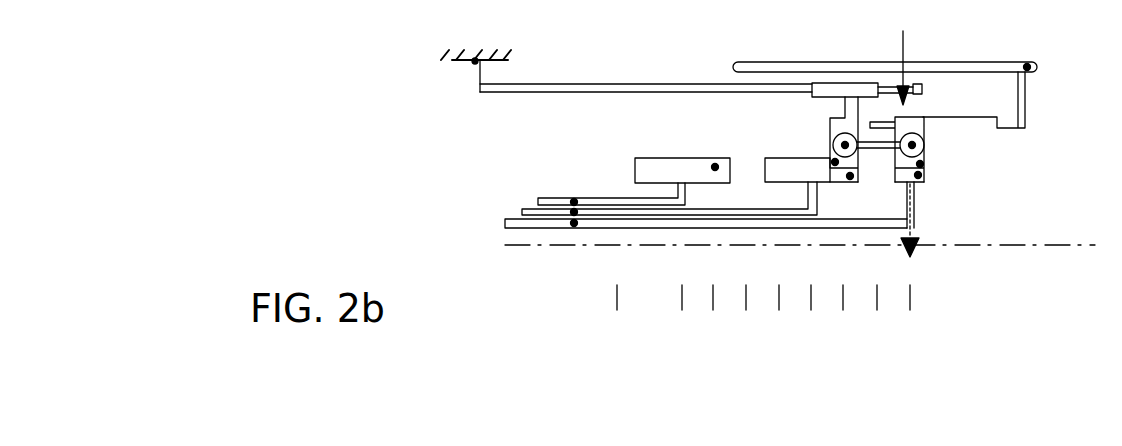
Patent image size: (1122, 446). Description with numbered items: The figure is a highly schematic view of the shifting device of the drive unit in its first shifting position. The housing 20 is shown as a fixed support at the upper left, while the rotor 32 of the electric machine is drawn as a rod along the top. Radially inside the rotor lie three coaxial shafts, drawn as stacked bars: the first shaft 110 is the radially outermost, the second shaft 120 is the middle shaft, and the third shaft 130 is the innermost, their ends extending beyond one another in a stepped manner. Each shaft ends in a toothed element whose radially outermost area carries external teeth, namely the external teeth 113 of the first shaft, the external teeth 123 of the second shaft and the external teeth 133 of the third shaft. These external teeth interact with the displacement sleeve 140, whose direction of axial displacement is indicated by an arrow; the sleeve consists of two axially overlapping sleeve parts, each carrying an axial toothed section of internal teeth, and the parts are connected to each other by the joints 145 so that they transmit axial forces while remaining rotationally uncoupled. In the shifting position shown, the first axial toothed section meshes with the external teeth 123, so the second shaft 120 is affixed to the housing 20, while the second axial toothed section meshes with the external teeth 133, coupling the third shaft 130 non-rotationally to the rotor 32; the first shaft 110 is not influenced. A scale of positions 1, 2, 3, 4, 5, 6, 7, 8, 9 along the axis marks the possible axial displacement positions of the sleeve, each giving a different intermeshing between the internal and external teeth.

The housing 20 is at (473, 62).
The rotor 32 is at (1027, 67).
The first shaft 110 is at (574, 202).
The second shaft 120 is at (574, 212).
The third shaft 130 is at (574, 223).
The external teeth 113 is at (715, 167).
The external teeth 123 is at (850, 176).
The external teeth 133 is at (918, 175).
The displacement sleeve 140 is at (902, 54).
The pivot joints 145 is at (845, 145).
The position 1 is at (910, 284).
The position 2 is at (877, 284).
The position 3 is at (843, 284).
The position 4 is at (811, 284).
The position 5 is at (779, 284).
The position 6 is at (746, 284).
The position 7 is at (713, 284).
The position 8 is at (682, 284).
The position 9 is at (617, 284).